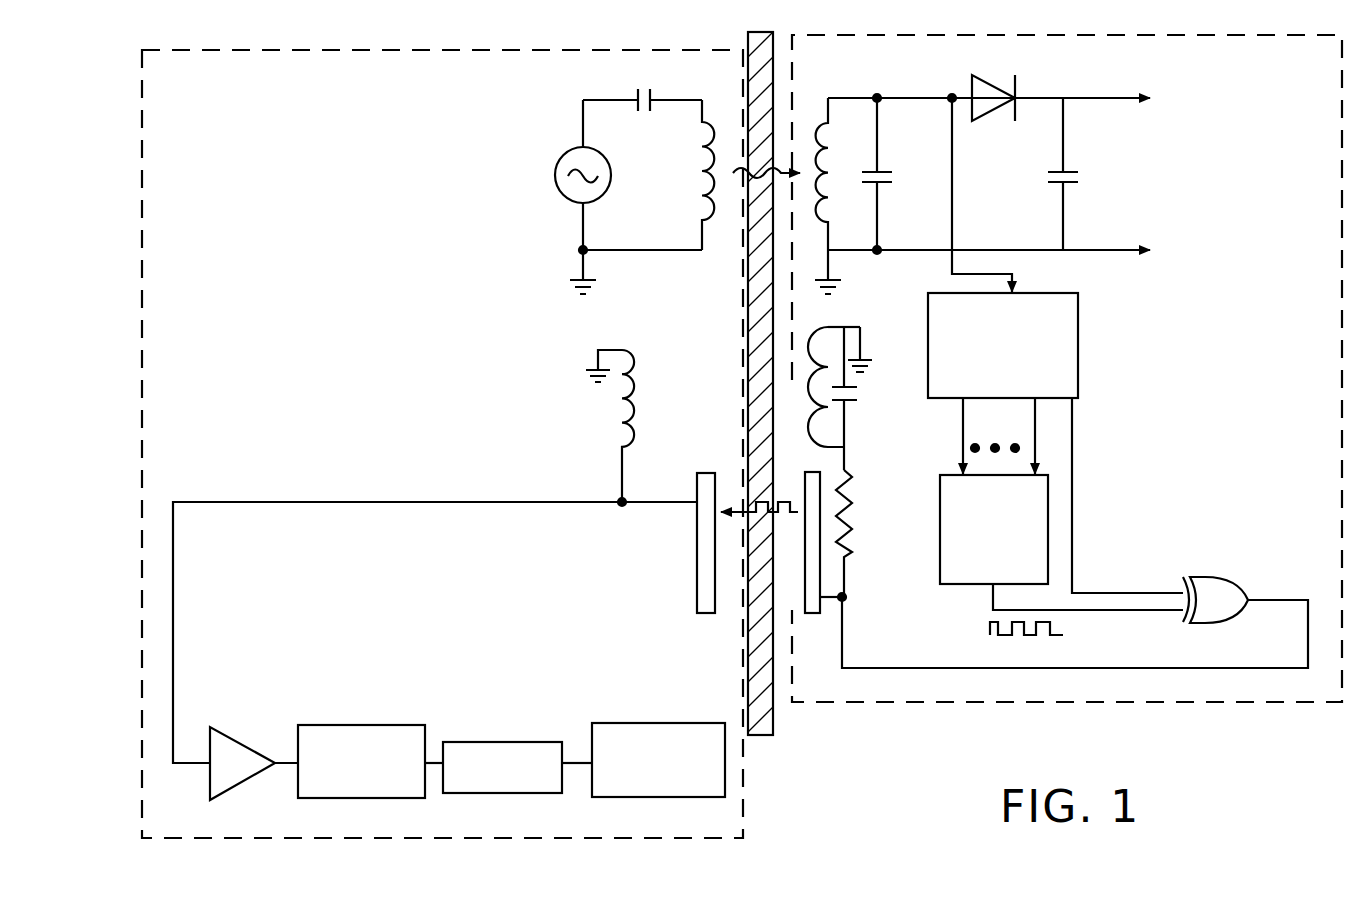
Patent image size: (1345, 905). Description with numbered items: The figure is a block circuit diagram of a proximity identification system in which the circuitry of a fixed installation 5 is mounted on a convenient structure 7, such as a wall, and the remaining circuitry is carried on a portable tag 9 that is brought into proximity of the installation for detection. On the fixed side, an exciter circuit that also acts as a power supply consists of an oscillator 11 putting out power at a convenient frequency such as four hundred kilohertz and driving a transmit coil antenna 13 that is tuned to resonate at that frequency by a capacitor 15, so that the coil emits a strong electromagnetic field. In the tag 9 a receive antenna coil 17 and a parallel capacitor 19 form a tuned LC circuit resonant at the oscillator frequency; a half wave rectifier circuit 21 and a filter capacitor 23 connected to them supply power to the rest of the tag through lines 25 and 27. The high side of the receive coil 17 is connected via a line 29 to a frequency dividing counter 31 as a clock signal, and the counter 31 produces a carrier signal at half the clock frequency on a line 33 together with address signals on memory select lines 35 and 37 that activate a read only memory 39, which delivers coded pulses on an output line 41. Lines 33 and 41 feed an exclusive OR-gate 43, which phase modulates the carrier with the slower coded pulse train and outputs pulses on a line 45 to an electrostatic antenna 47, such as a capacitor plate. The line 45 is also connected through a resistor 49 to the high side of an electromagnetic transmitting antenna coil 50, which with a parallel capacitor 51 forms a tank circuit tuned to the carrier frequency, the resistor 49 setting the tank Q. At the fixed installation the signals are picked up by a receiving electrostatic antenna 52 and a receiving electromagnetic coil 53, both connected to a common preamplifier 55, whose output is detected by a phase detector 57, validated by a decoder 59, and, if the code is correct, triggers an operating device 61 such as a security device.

The circuitry of a fixed installation 5 is at (624, 47).
The structure 7 is at (757, 29).
The tag 9 is at (864, 33).
The oscillator 11 is at (568, 152).
The transmit coil antenna 13 is at (707, 190).
The capacitor 15 is at (649, 92).
The receive antenna coil 17 is at (834, 148).
The capacitor 19 is at (891, 170).
The half wave rectifier circuit 21 is at (991, 112).
The filter capacitor 23 is at (1086, 176).
The line 25 is at (1121, 97).
The line 27 is at (1107, 252).
The line 29 is at (1014, 277).
The frequency dividing counter 31 is at (1080, 340).
The line 33 is at (1072, 497).
The memory select line 35 is at (963, 421).
The memory select line 37 is at (1040, 423).
The read only memory 39 is at (940, 543).
The output line 41 is at (993, 605).
The exclusive OR-gate 43 is at (1231, 580).
The line 45 is at (1290, 602).
The electrostatic antenna 47 is at (799, 585).
The resistor 49 is at (848, 520).
The electromagnetic transmitting antenna coil 50 is at (806, 412).
The capacitor 51 is at (858, 380).
The receiving electrostatic antenna 52 is at (697, 568).
The receiving electromagnetic antenna coil 53 is at (638, 355).
The preamplifier circuit 55 is at (243, 712).
The phase detector 57 is at (375, 725).
The decoder 59 is at (505, 742).
The operating device 61 is at (665, 723).